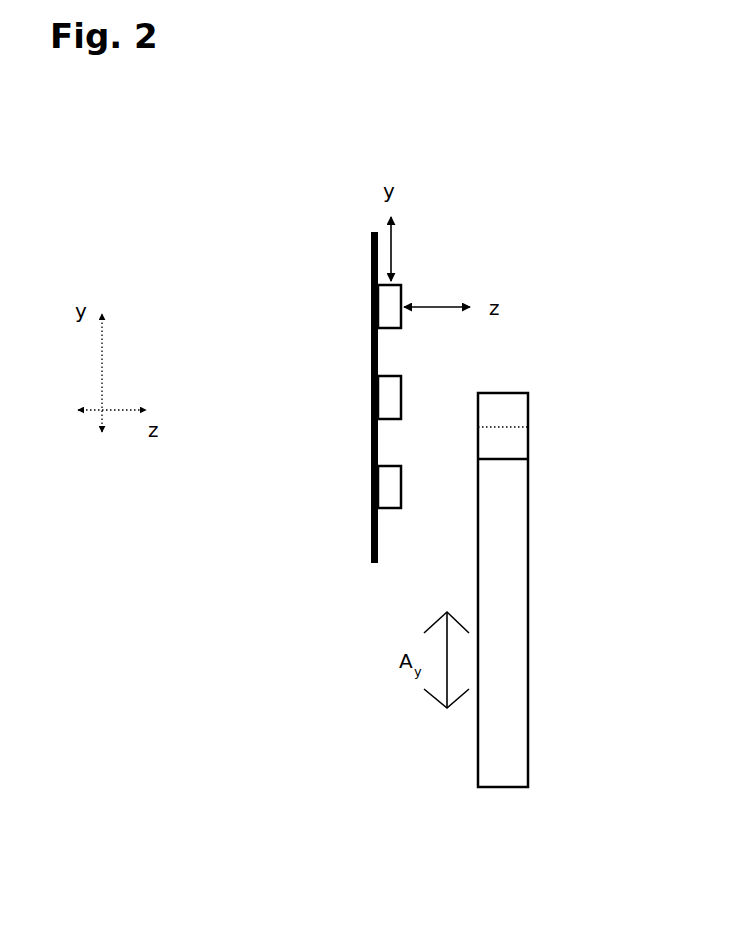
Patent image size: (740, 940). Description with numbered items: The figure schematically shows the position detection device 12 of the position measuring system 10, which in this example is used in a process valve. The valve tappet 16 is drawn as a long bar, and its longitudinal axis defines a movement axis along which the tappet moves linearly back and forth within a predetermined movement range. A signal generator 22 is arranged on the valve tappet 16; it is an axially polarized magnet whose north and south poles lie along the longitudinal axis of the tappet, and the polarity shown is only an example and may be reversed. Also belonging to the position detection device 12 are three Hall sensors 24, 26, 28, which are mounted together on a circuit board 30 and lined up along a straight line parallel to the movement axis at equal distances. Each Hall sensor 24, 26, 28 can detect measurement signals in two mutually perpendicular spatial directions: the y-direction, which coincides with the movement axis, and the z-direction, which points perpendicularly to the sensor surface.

The position measuring system 10 is at (134, 154).
The position detection device 12 is at (580, 317).
The valve tappet 16 is at (513, 661).
The signal generator 22 is at (548, 430).
The Hall sensor 24 is at (386, 307).
The Hall sensor 26 is at (386, 401).
The Hall sensor 28 is at (386, 484).
The circuit board 30 is at (370, 247).